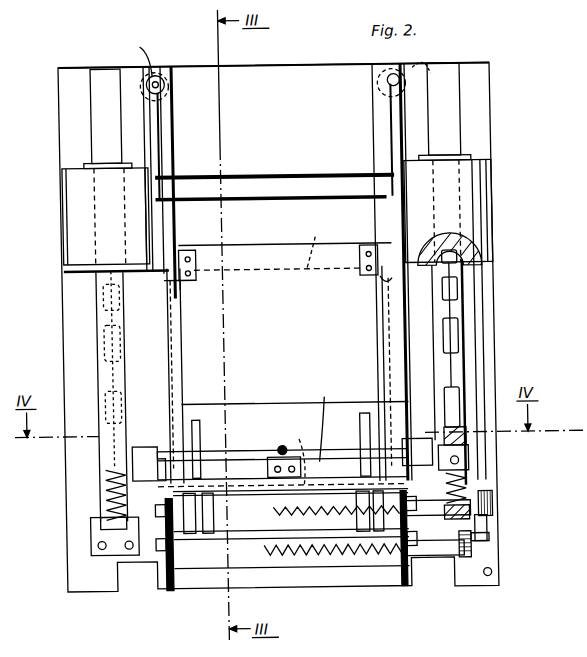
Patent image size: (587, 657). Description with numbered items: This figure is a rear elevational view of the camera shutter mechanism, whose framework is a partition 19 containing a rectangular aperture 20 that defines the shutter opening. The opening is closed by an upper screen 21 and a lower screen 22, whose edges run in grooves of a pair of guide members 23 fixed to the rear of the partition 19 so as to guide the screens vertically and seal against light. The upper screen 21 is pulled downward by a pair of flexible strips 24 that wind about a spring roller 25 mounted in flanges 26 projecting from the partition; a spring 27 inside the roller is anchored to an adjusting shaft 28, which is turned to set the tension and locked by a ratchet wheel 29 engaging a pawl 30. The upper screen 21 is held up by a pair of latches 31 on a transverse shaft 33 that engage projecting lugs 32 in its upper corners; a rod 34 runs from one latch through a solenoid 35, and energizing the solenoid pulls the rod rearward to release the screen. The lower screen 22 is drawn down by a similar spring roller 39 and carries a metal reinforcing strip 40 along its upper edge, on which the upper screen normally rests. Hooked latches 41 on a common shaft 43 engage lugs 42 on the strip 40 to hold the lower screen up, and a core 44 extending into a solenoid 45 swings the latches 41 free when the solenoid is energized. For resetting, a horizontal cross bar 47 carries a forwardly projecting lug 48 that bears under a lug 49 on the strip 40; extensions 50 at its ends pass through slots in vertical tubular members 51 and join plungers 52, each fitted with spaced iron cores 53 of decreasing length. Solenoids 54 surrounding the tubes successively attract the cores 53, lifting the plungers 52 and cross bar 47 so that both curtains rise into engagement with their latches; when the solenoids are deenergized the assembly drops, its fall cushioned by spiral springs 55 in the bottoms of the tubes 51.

The partition 19 is at (303, 66).
The rectangular aperture 20 is at (278, 244).
The upper screen 21 is at (249, 250).
The lower screen 22 is at (323, 421).
The guide members 23 is at (170, 347).
The flexible strips 24 is at (193, 440).
The spring roller 25 is at (232, 530).
The flanges 26 is at (160, 575).
The spring 27 is at (295, 455).
The adjusting shaft 28 is at (418, 520).
The ratchet wheel 29 is at (485, 500).
The pawl 30 is at (480, 530).
The latches 31 is at (158, 128).
The projecting lugs 32 is at (160, 284).
The transverse shaft 33 is at (300, 178).
The rod 34 is at (386, 86).
The solenoid 35 is at (426, 56).
The spring roller 39 is at (256, 562).
The metal reinforcing strip 40 is at (242, 406).
The latches 41 is at (172, 309).
The lugs 42 is at (150, 452).
The common shaft 43 is at (203, 204).
The core 44 is at (136, 54).
The solenoid 45 is at (163, 72).
The horizontal cross bar 47 is at (238, 472).
The forwardly projecting lug 48 is at (270, 460).
The lug 49 is at (276, 449).
The extensions 50 is at (457, 437).
The vertical tubular members 51 is at (100, 310).
The plungers 52 is at (98, 370).
The cores 53 is at (452, 262).
The solenoids 54 is at (74, 203).
The spiral springs 55 is at (98, 496).